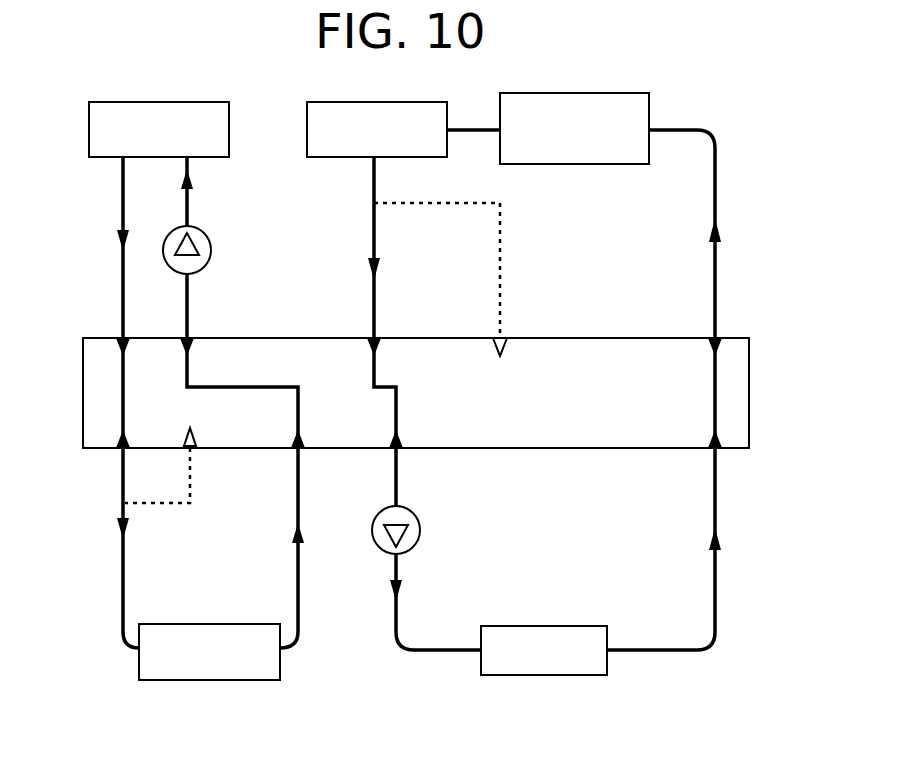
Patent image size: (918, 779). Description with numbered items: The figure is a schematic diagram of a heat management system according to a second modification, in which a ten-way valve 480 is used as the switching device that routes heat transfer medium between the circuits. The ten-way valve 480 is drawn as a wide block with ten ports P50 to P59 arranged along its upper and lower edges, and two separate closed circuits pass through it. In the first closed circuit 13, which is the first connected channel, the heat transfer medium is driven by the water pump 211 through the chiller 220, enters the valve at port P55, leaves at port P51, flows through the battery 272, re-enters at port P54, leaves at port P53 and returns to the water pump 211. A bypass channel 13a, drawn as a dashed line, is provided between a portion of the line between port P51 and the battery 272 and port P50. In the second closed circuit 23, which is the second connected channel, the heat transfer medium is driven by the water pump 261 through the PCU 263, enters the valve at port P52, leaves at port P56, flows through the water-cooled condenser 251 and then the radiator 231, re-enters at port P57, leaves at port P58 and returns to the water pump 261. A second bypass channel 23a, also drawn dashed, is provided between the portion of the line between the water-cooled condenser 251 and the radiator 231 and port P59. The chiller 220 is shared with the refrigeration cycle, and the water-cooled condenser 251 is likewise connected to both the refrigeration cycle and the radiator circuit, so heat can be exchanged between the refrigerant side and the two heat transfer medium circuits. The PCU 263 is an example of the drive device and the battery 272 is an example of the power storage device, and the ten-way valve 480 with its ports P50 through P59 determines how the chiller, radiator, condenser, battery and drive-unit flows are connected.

The closed circuit 13 is at (121, 209).
The bypass channel 13a is at (196, 504).
The closed circuit 23 is at (717, 591).
The bypass channel 23a is at (502, 288).
The water pump 211 is at (204, 234).
The chiller 220 is at (186, 102).
The radiator 231 is at (401, 102).
The water-cooled condenser 251 is at (595, 93).
The water pump 261 is at (410, 510).
The PCU 263 is at (565, 626).
The battery 272 is at (231, 624).
The ten-way valve 480 is at (574, 338).
The port P50 is at (184, 437).
The port P51 is at (116, 439).
The port P52 is at (710, 440).
The port P53 is at (193, 351).
The port P54 is at (292, 438).
The port P55 is at (119, 351).
The port P56 is at (708, 351).
The port P57 is at (370, 351).
The port P58 is at (388, 437).
The port P59 is at (495, 351).